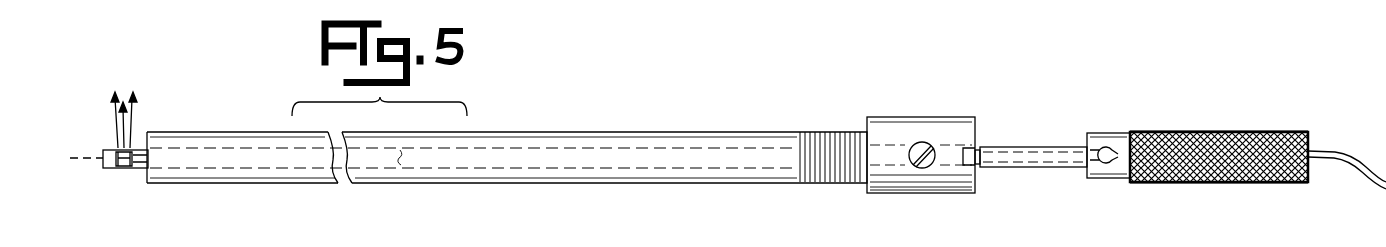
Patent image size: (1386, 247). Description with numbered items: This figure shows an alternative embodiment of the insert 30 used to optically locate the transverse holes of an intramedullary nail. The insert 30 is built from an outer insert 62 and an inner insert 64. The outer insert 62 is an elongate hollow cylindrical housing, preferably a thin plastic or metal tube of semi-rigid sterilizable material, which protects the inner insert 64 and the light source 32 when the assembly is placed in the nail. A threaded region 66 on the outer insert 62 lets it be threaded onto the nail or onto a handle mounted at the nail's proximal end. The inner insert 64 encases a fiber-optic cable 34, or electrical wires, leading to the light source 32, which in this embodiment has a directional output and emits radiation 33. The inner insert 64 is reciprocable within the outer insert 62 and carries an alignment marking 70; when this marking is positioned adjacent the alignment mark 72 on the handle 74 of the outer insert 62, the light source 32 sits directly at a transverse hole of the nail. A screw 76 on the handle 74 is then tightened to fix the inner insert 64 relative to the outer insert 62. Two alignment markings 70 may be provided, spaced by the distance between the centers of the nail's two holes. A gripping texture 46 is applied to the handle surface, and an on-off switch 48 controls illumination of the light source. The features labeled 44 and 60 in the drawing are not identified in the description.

The insert 30 is at (980, 95).
The light source 32 is at (110, 140).
The radiation 33 is at (150, 107).
The fiber-optic cable 34 is at (308, 160).
The handle 44 is at (1288, 72).
The gripping texture 46 is at (1250, 132).
The on-off switch 48 is at (1120, 150).
The probe tip 60 is at (97, 160).
The outer insert 62 is at (680, 132).
The inner insert 64 is at (517, 148).
The threaded region 66 is at (822, 132).
The alignment marking 70 is at (985, 148).
The alignment mark 72 is at (975, 170).
The handle 74 is at (953, 180).
The screw 76 is at (912, 164).